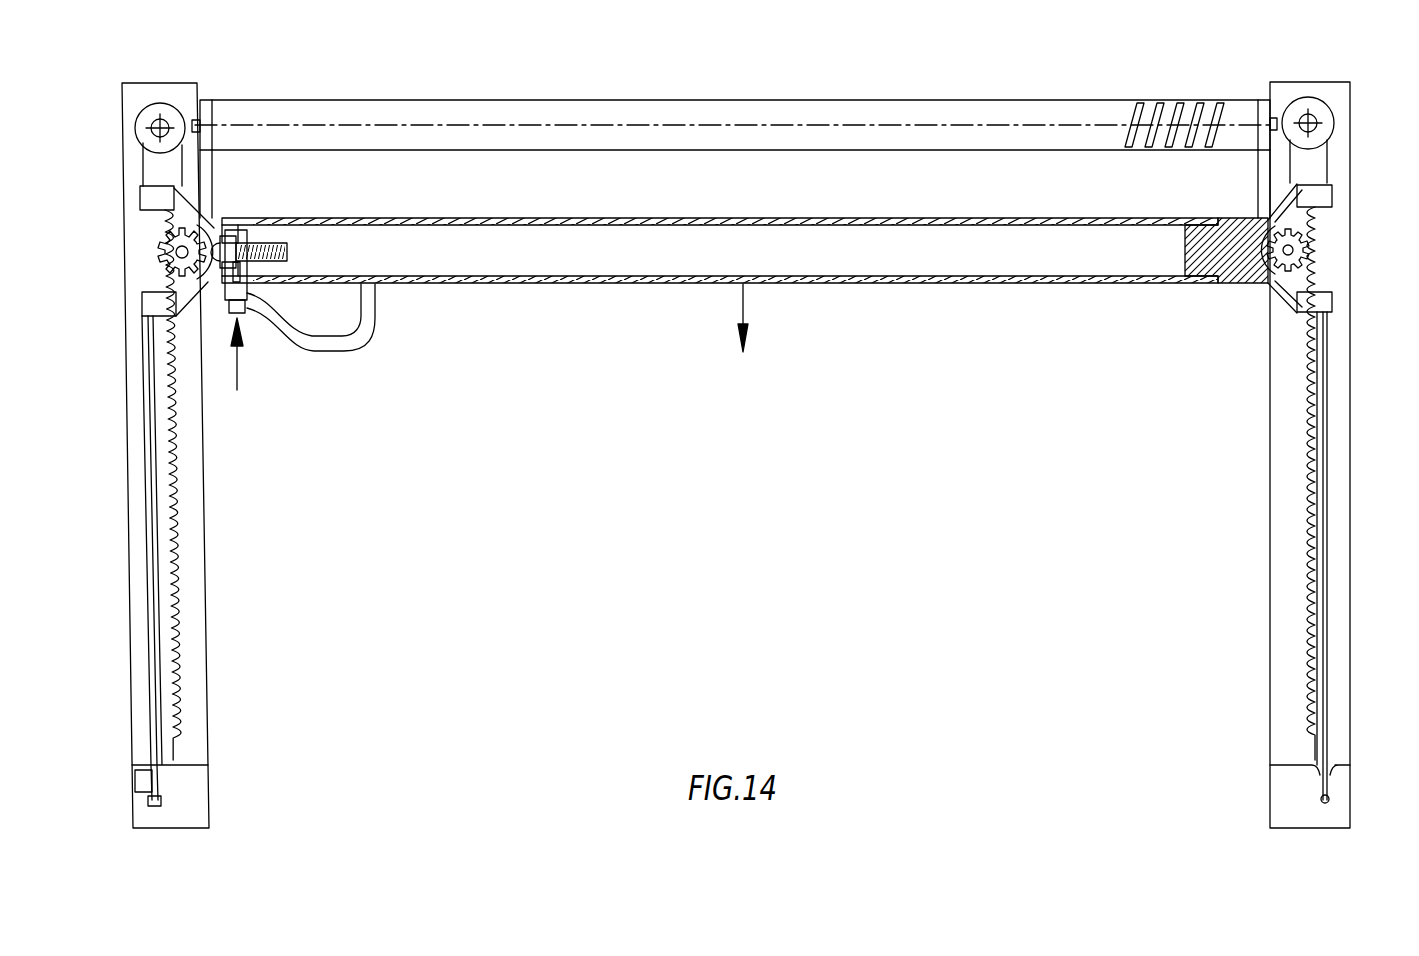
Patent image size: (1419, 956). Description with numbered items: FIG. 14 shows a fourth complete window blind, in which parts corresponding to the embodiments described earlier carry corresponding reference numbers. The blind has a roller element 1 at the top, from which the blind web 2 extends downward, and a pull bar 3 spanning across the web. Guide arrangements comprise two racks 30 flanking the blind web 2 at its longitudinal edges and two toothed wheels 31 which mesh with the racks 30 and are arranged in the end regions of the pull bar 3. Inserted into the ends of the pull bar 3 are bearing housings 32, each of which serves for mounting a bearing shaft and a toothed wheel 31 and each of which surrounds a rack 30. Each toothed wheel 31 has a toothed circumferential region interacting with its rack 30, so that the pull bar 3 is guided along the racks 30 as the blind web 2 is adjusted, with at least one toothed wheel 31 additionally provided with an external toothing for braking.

The roller tube 1 is at (808, 99).
The blind web 2 is at (680, 172).
The pull bar 3 is at (850, 281).
The rack 30 is at (155, 667).
The toothed wheel 31 is at (150, 300).
The bearing housing 32 is at (221, 222).